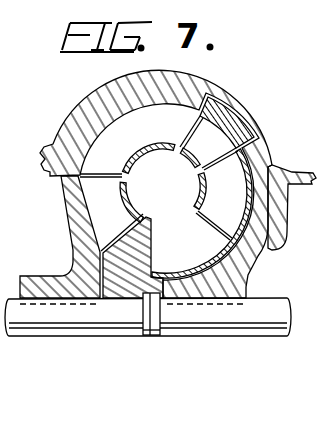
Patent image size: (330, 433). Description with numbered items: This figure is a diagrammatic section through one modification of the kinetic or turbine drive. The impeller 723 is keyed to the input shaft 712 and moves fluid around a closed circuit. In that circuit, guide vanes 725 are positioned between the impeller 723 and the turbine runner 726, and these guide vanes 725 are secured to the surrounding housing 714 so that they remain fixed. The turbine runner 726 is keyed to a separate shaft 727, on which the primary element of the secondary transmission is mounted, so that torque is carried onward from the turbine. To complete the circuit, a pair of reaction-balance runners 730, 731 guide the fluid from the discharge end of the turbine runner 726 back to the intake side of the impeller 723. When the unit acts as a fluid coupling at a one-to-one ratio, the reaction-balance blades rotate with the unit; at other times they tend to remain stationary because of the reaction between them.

The input shaft 712 is at (70, 337).
The housing 714 is at (295, 170).
The impeller 723 is at (84, 217).
The guide vanes 725 is at (119, 127).
The turbine runner 726 is at (213, 135).
The shaft 727 is at (284, 333).
The reaction-balance runner 730 is at (132, 244).
The reaction-balance runner 731 is at (218, 220).